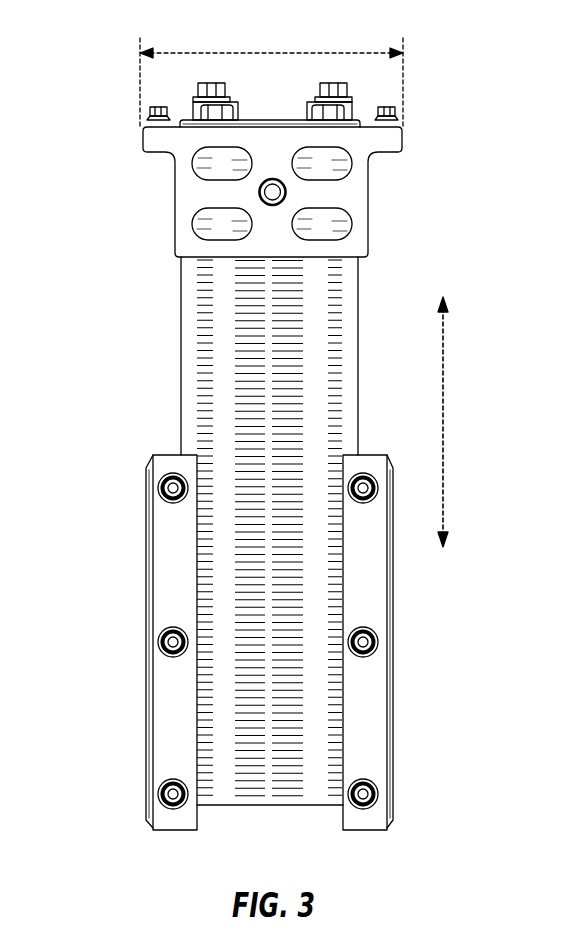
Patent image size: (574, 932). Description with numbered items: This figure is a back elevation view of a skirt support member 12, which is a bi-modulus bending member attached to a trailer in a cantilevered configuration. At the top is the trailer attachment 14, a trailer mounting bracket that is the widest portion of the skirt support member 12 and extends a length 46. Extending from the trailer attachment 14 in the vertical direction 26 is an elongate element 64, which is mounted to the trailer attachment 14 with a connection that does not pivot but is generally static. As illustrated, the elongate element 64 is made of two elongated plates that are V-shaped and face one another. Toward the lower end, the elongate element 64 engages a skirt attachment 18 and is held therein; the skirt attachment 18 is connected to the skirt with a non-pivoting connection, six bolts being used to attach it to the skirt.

The skirt support member 12 is at (125, 66).
The trailer attachment 14 is at (365, 125).
The length 46 is at (273, 52).
The elongate element 64 is at (213, 350).
The skirt attachment 18 is at (155, 605).
The vertical direction 26 is at (443, 423).